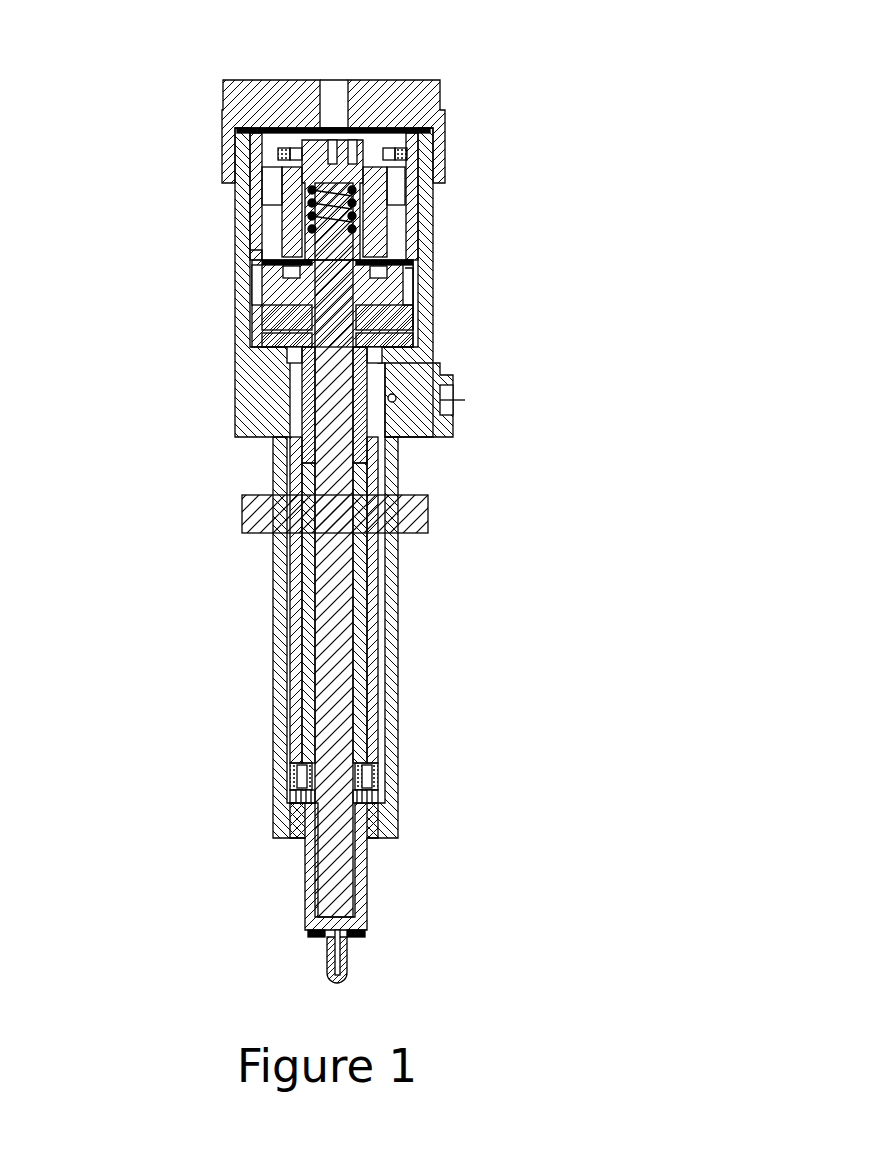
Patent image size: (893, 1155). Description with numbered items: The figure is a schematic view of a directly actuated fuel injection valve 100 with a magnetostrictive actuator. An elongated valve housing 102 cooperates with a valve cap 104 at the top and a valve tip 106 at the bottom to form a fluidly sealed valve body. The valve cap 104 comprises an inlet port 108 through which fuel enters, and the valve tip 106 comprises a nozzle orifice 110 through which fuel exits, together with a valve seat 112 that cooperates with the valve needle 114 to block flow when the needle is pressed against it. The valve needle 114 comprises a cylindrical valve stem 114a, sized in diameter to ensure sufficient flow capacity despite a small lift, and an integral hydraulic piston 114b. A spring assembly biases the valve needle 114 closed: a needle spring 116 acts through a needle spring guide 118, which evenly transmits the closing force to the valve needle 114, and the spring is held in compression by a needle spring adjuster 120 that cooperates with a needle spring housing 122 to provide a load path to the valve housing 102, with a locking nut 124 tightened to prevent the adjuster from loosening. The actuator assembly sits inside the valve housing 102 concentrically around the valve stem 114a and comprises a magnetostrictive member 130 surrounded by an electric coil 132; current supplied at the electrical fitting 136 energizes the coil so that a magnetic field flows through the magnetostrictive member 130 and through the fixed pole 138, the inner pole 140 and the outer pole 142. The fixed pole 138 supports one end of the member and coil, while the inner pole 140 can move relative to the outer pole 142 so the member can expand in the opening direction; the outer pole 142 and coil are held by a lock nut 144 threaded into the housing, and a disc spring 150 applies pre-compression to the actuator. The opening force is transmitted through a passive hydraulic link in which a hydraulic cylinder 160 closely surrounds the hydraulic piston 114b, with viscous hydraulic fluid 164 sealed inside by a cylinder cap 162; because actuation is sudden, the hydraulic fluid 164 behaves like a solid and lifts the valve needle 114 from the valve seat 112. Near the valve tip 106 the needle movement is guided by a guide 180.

The fuel injection valve 100 is at (176, 46).
The valve housing 102 is at (243, 410).
The valve cap 104 is at (427, 98).
The valve tip 106 is at (365, 855).
The inlet port 108 is at (355, 78).
The nozzle orifice 110 is at (330, 975).
The valve seat 112 is at (365, 912).
The valve needle 114 is at (338, 512).
The valve stem 114a is at (362, 630).
The hydraulic piston 114b is at (405, 283).
The needle spring 116 is at (258, 150).
The needle spring guide 118 is at (370, 213).
The needle spring adjuster 120 is at (300, 125).
The needle spring housing 122 is at (387, 173).
The locking nut 124 is at (388, 150).
The magnetostrictive member 130 is at (295, 640).
The electric coil 132 is at (285, 600).
The electrical fitting 136 is at (430, 390).
The fixed pole 138 is at (298, 768).
The inner pole 140 is at (255, 305).
The outer pole 142 is at (255, 335).
The lock nut 144 is at (403, 343).
The disc spring 150 is at (378, 258).
The hydraulic cylinder 160 is at (400, 313).
The cylinder cap 162 is at (252, 250).
The hydraulic fluid 164 is at (255, 275).
The guide 180 is at (372, 795).